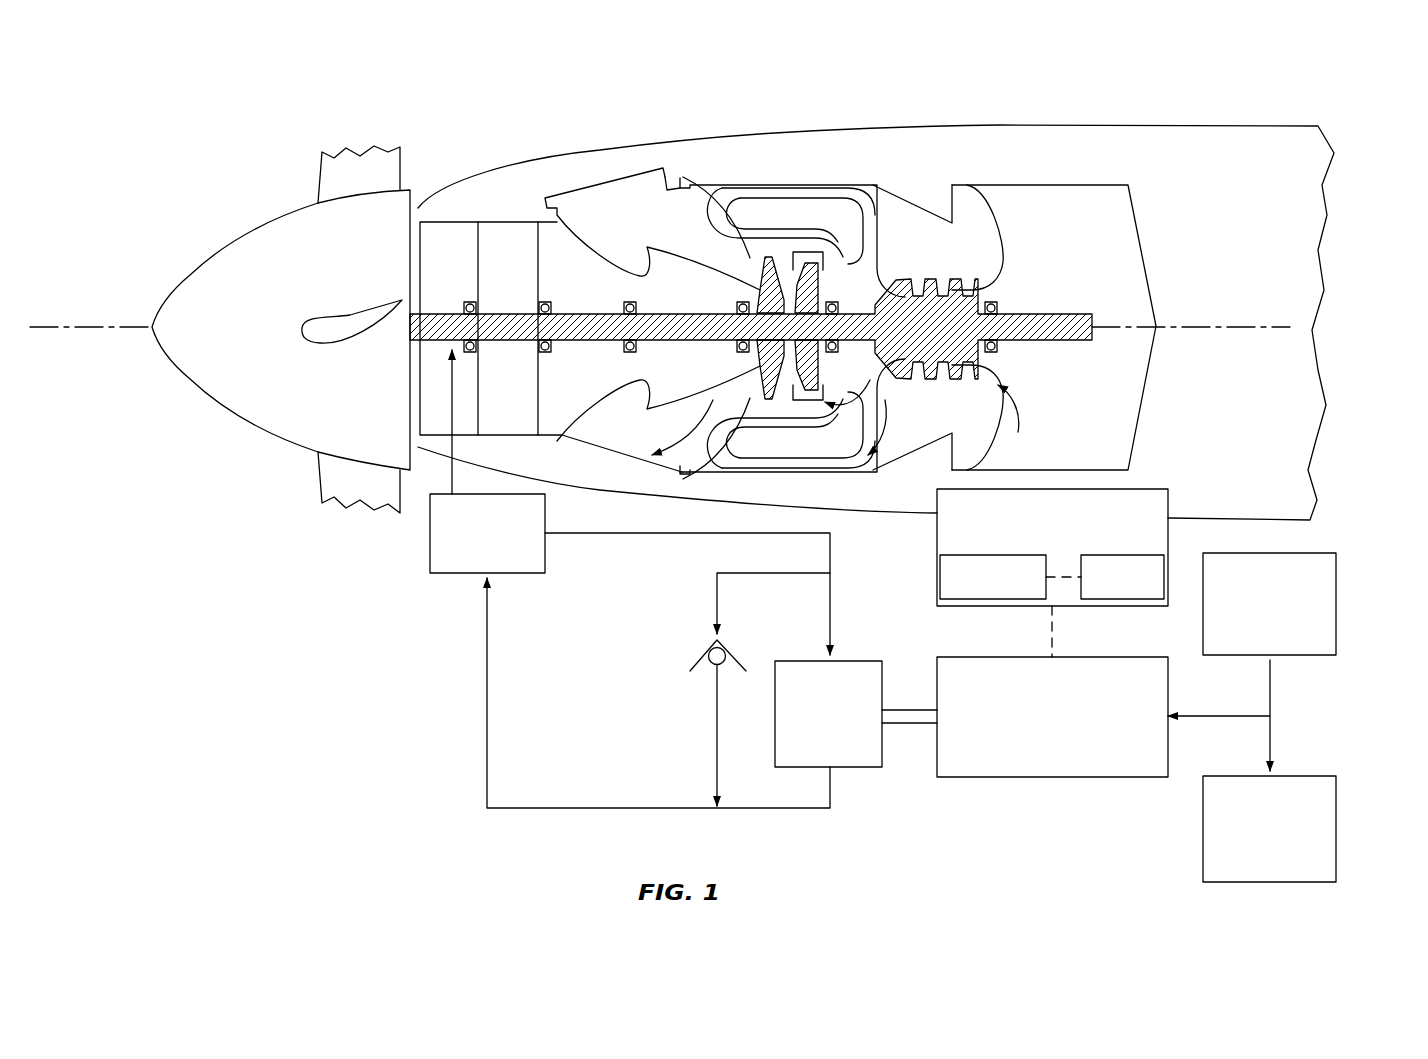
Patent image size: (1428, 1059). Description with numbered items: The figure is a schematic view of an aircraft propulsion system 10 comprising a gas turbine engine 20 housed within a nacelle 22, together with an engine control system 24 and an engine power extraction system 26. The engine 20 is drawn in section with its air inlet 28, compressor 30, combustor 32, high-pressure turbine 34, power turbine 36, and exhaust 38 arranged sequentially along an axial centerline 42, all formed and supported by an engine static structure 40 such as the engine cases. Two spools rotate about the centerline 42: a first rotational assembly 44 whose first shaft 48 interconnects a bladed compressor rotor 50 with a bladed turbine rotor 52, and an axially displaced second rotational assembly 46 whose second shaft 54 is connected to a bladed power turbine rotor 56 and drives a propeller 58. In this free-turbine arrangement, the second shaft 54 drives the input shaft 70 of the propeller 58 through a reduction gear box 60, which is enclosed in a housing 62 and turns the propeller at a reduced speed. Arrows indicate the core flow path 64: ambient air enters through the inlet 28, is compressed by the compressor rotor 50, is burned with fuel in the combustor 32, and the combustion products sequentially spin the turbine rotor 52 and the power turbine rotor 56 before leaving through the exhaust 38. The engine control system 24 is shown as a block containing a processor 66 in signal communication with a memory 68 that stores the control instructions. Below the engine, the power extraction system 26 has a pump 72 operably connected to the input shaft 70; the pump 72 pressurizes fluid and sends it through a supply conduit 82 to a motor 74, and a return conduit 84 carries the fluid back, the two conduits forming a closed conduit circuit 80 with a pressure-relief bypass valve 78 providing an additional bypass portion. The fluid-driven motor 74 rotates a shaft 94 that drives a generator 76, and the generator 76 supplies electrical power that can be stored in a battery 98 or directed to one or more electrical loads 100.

The propulsion system 10 is at (1185, 95).
The gas turbine engine 20 is at (1088, 150).
The nacelle 22 is at (876, 516).
The engine control system 24 is at (1168, 500).
The engine power extraction system 26 is at (452, 688).
The air inlet 28 is at (997, 185).
The compressor 30 is at (938, 270).
The combustor 32 is at (800, 192).
The high-pressure turbine 34 is at (822, 392).
The power turbine 36 is at (752, 258).
The exhaust 38 is at (595, 178).
The engine static structure 40 is at (878, 172).
The axial centerline 42 is at (1286, 328).
The first rotational assembly 44 is at (938, 388).
The second rotational assembly 46 is at (603, 360).
The first shaft 48 is at (878, 300).
The bladed compressor rotor 50 is at (955, 342).
The bladed turbine rotor 52 is at (808, 395).
The second shaft 54 is at (667, 312).
The bladed power turbine rotor 56 is at (762, 362).
The propeller 58 is at (236, 437).
The reduction gear box 60 is at (507, 382).
The housing 62 is at (478, 385).
The core flow path 64 is at (835, 385).
The processor 66 is at (990, 600).
The memory 68 is at (1100, 600).
The input shaft 70 is at (442, 318).
The pump 72 is at (523, 574).
The motor 74 is at (858, 768).
The generator 76 is at (1052, 778).
The pressure-relief bypass valve 78 is at (700, 652).
The conduit circuit 80 is at (560, 823).
The supply conduit 82 is at (667, 534).
The return conduit 84 is at (622, 808).
The shaft 94 is at (903, 726).
The battery 98 is at (1336, 808).
The electrical loads 100 is at (1336, 582).